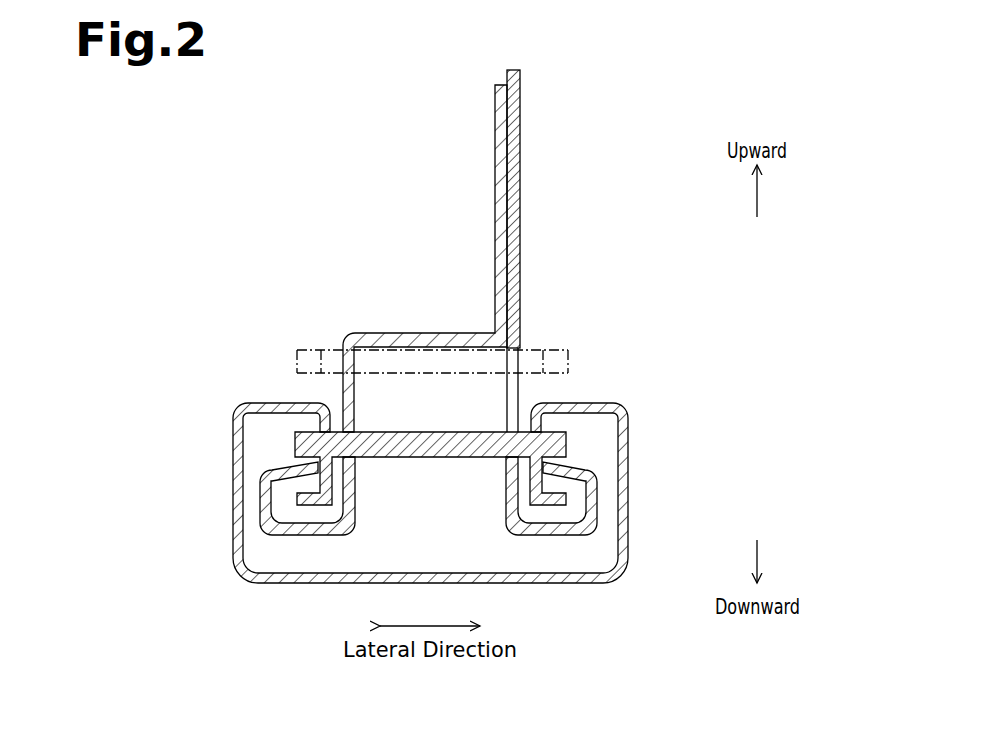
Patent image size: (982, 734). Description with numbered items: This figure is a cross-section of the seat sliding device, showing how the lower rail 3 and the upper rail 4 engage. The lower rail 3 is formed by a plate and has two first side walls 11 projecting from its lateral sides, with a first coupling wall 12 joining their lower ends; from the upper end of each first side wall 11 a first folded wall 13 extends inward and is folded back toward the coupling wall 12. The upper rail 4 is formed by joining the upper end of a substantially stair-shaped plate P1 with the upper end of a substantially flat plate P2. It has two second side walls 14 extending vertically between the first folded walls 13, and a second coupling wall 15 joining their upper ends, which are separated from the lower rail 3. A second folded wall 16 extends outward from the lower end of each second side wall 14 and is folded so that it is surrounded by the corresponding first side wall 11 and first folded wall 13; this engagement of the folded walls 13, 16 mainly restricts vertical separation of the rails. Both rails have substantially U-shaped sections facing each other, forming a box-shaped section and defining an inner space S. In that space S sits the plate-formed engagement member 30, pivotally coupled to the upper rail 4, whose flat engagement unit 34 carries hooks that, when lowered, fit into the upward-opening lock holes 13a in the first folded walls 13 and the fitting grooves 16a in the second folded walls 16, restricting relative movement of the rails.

The lower rail 3 is at (630, 562).
The upper rail 4 is at (370, 333).
The first side wall 11 is at (232, 510).
The first coupling wall 12 is at (427, 585).
The first folded wall 13 is at (242, 408).
The lock hole 13a is at (297, 406).
The second side wall 14 is at (343, 380).
The second coupling wall 15 is at (420, 333).
The second folded wall 16 is at (288, 537).
The fitting groove 16a is at (290, 468).
The engagement member 30 is at (443, 462).
The engagement unit 34 is at (550, 420).
The substantially stair-shaped plate P1 is at (495, 113).
The substantially flat plate P2 is at (520, 127).
The inner space S is at (486, 546).